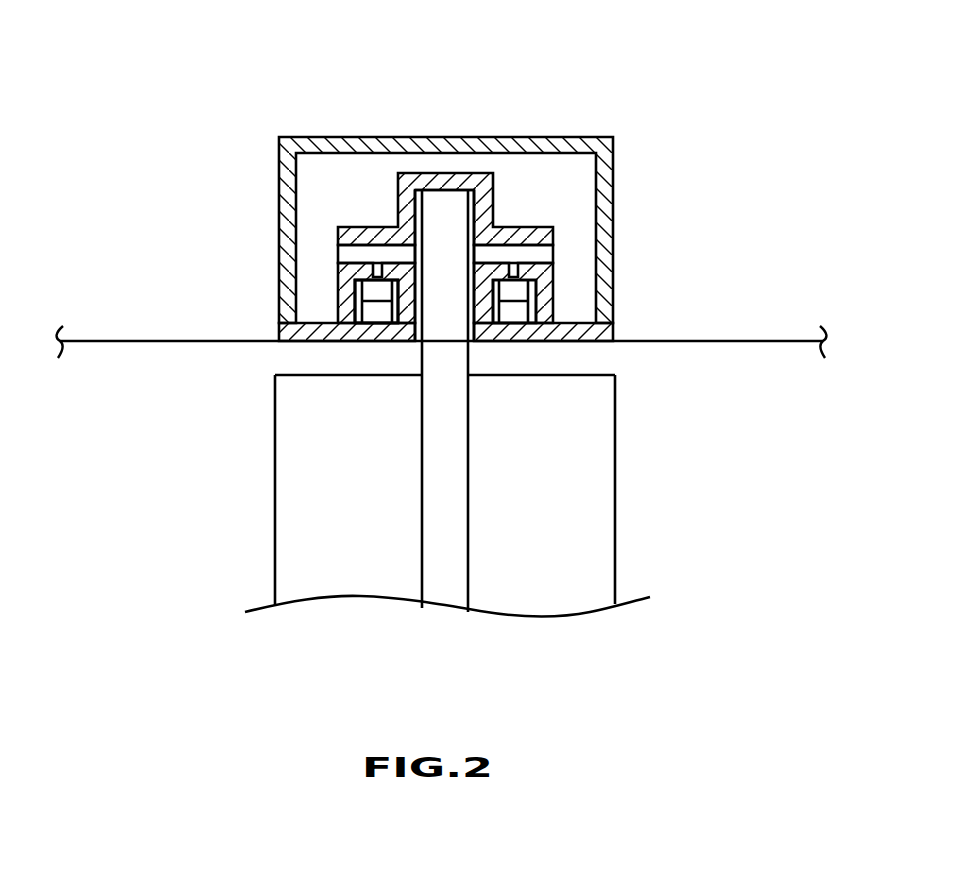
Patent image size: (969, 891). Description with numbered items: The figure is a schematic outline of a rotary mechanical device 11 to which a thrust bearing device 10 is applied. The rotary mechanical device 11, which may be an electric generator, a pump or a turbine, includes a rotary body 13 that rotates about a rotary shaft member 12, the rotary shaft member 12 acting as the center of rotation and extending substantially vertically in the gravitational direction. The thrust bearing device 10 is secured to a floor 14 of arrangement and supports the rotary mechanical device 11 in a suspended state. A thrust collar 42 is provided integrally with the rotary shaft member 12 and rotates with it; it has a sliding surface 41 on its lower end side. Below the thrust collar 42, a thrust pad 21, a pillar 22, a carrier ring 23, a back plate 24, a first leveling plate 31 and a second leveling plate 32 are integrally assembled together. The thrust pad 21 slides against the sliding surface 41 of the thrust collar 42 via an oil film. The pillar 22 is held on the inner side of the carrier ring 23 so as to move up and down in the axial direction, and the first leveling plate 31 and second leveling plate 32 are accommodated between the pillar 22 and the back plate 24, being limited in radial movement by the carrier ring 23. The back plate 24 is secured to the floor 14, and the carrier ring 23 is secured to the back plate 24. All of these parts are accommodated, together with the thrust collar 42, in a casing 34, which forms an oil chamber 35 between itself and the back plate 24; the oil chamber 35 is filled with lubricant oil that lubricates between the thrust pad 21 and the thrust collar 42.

The thrust bearing device 10 is at (682, 105).
The rotary mechanical device 11 is at (705, 530).
The rotary shaft member 12 is at (438, 516).
The rotary body 13 is at (273, 568).
The floor 14 is at (120, 340).
The thrust pad 21 is at (338, 257).
The pillar 22 is at (373, 272).
The carrier ring 23 is at (372, 292).
The back plate 24 is at (560, 343).
The first leveling plate 31 is at (355, 297).
The second leveling plate 32 is at (378, 313).
The casing 34 is at (278, 188).
The oil chamber 35 is at (325, 167).
The sliding surface 41 is at (553, 250).
The thrust collar 42 is at (397, 200).